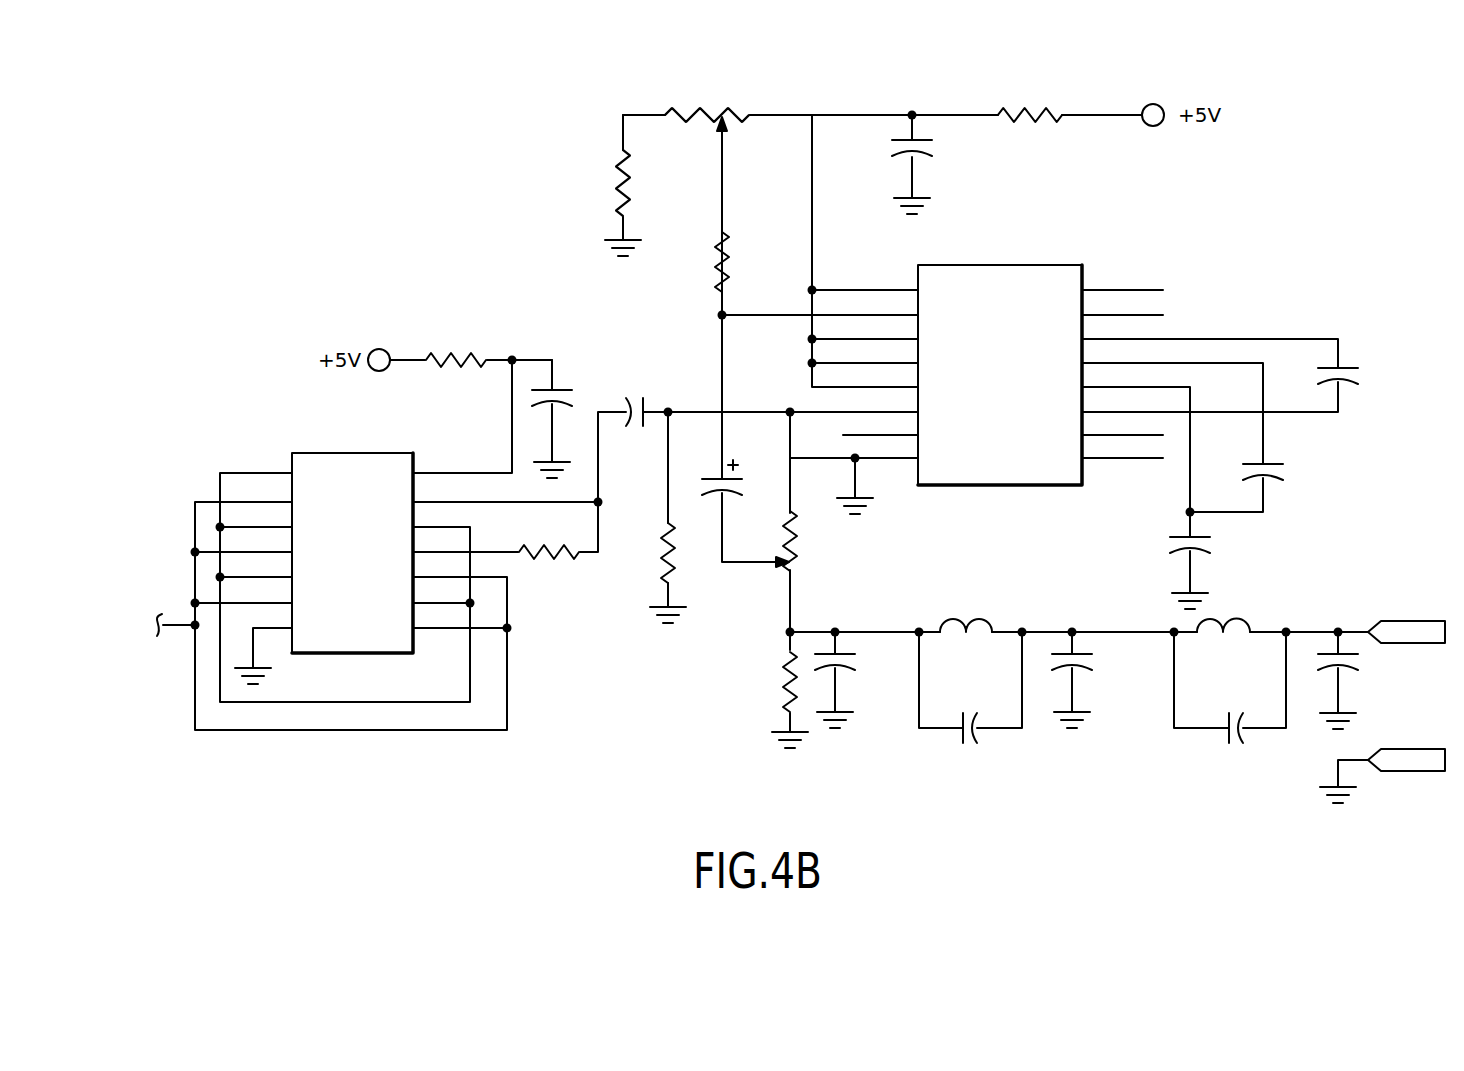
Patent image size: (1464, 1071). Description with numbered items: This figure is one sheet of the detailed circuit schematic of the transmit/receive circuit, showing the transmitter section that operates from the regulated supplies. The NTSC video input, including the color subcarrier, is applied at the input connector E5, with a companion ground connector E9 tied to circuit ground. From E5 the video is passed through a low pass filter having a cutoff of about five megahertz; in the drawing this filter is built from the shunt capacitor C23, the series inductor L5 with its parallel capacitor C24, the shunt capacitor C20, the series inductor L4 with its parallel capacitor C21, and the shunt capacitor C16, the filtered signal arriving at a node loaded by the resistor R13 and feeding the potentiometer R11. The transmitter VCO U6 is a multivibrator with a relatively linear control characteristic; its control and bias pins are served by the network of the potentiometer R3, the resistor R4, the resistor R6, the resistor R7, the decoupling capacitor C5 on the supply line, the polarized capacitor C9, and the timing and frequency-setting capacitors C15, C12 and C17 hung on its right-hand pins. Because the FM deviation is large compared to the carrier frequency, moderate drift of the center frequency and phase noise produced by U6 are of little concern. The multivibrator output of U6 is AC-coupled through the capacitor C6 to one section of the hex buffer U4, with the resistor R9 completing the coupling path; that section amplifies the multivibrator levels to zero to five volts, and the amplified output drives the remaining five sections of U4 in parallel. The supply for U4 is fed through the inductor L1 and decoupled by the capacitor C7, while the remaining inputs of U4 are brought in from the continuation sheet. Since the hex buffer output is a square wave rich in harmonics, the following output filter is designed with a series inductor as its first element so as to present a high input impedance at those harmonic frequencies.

The potentiometer R3 is at (707, 199).
The resistor R4 is at (638, 185).
The resistor R6 is at (741, 276).
The resistor R7 is at (846, 351).
The capacitor C5 is at (927, 164).
The transmitter VCO U6 is at (915, 314).
The capacitor C15 is at (1240, 375).
The capacitor C12 is at (1203, 437).
The capacitor C17 is at (1166, 498).
The inductor L1 is at (471, 339).
The capacitor C7 is at (560, 419).
The hex buffer U4 is at (308, 545).
The capacitor C6 is at (547, 436).
The resistor R9 is at (505, 530).
The capacitor C9 is at (745, 441).
The potentiometer R11 is at (819, 522).
The resistor R13 is at (776, 690).
The capacitor C16 is at (856, 678).
The inductor L4 is at (971, 613).
The capacitor C21 is at (970, 687).
The capacitor C20 is at (1093, 678).
The inductor L5 is at (1230, 613).
The capacitor C24 is at (1231, 687).
The capacitor C23 is at (1363, 679).
The video input E5 is at (1409, 616).
The ground connector E9 is at (1382, 768).